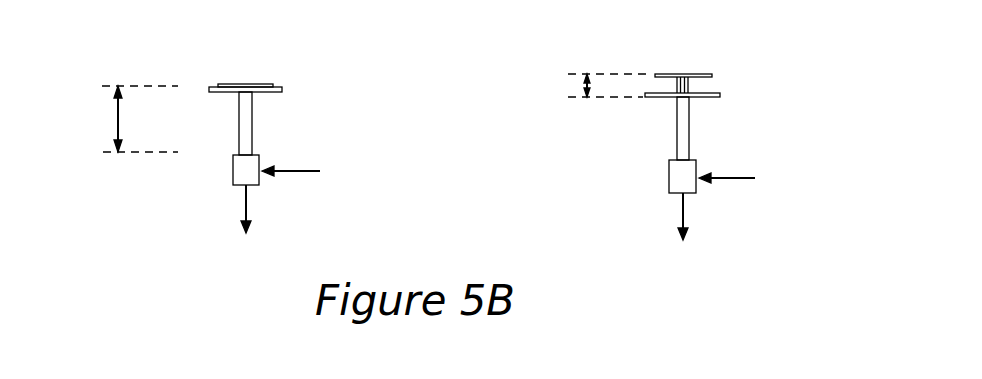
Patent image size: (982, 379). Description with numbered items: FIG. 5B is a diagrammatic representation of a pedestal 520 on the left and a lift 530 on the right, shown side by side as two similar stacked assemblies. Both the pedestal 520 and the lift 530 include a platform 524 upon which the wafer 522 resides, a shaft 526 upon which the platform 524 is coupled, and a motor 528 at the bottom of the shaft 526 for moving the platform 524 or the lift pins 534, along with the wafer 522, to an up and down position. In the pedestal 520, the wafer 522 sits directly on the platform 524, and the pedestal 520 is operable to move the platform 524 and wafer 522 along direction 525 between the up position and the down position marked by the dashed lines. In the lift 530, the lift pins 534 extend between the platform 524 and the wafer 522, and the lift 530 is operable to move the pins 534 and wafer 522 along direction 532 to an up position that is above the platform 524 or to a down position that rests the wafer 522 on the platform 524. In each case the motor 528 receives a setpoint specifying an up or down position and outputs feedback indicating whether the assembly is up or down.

The pedestal 520 is at (226, 146).
The wafer 522 is at (232, 84).
The platform 524 is at (210, 89).
The direction 525 is at (113, 118).
The shaft 526 is at (252, 135).
The motor 528 is at (233, 170).
The lift 530 is at (679, 153).
The direction 532 is at (583, 88).
The lift pins 534 is at (688, 90).